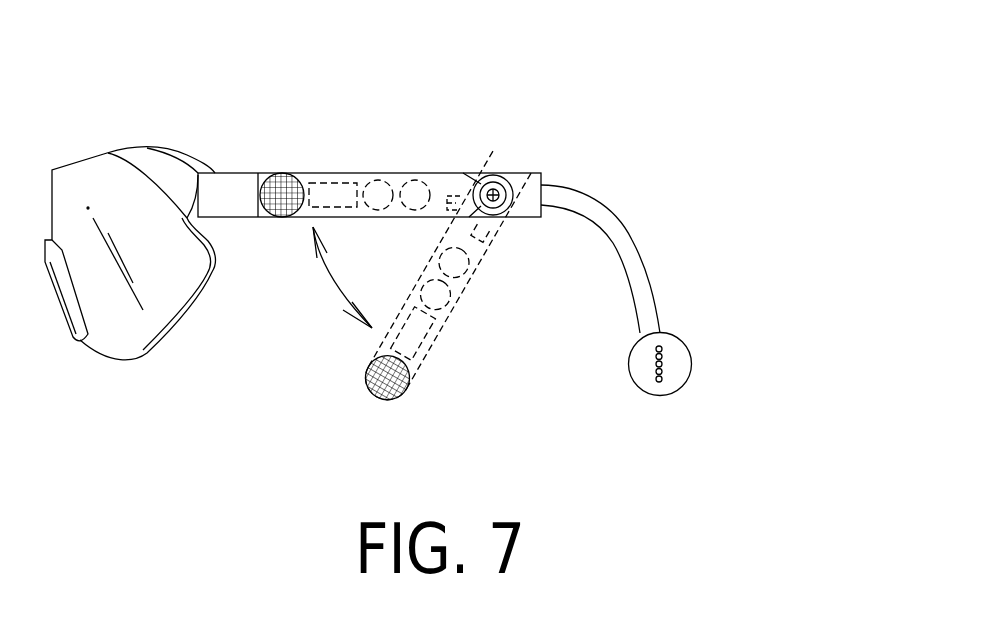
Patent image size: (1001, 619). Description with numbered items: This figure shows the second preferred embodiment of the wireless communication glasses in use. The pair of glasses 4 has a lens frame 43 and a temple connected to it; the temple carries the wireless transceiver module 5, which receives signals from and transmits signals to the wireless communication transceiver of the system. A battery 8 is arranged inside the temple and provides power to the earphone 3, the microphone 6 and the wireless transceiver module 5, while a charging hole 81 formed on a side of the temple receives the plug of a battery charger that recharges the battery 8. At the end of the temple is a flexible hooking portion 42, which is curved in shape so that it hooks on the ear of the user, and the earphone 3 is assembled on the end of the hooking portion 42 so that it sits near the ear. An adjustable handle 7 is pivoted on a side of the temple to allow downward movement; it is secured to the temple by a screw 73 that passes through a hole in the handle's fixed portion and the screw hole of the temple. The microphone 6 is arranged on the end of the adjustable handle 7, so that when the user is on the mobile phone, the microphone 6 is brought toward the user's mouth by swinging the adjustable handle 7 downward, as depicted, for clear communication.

The earphone 3 is at (682, 357).
The glasses 4 is at (65, 136).
The lens frame 43 is at (102, 175).
The wireless transceiver module 5 is at (330, 178).
The microphone 6 is at (273, 175).
The adjustable handle 7 is at (423, 172).
The battery 8 is at (390, 178).
The charging hole 81 is at (463, 172).
The screw 73 is at (500, 172).
The hooking portion 42 is at (613, 222).